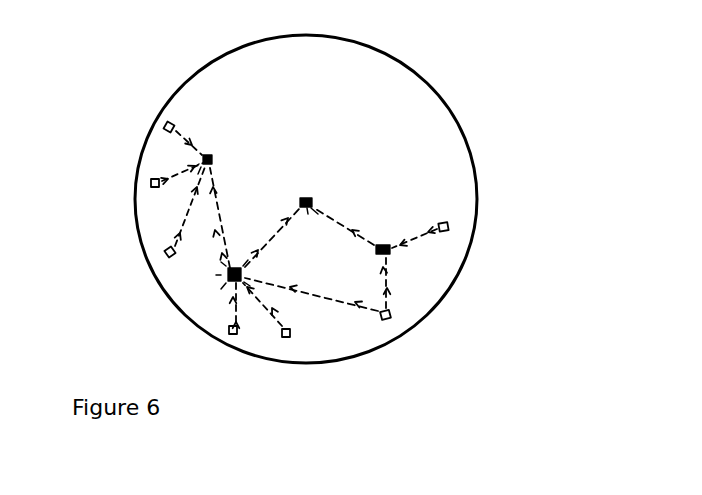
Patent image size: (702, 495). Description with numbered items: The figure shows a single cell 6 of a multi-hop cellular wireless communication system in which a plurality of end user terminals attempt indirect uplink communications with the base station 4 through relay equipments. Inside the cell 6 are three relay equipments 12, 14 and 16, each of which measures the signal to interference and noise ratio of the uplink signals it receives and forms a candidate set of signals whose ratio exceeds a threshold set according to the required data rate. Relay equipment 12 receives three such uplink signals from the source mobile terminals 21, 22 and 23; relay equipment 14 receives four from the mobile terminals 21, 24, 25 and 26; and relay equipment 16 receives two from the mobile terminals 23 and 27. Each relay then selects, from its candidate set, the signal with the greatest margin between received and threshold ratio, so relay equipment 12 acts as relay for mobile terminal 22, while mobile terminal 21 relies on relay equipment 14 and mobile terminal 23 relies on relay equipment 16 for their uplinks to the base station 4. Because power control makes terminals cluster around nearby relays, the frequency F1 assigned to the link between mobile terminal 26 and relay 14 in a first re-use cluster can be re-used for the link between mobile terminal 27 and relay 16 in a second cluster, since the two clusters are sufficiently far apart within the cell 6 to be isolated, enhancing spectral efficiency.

The cell 6 is at (460, 118).
The relay equipment 14 is at (204, 153).
The relay equipment 12 is at (244, 275).
The base station 4 is at (313, 202).
The relay equipment 16 is at (390, 252).
The source mobile terminal 21 is at (229, 331).
The source mobile terminal 22 is at (288, 337).
The source mobile terminal 23 is at (388, 319).
The source mobile terminal 24 is at (165, 254).
The source mobile terminal 25 is at (150, 184).
The source mobile terminal 26 is at (164, 124).
The source mobile terminal 27 is at (449, 228).
The frequency f1 F1 is at (302, 179).